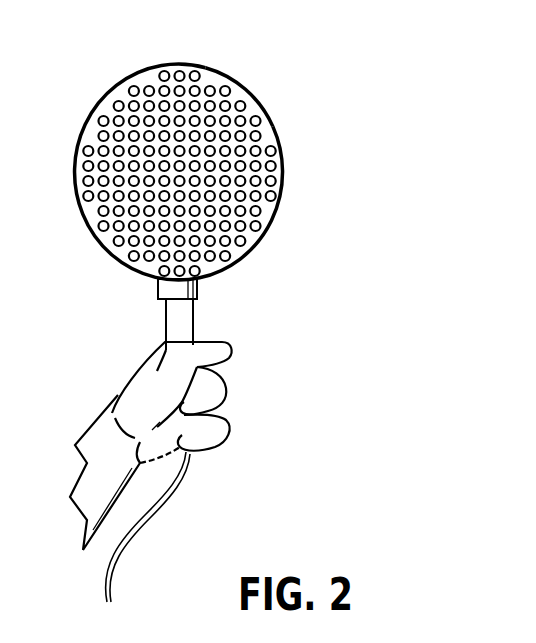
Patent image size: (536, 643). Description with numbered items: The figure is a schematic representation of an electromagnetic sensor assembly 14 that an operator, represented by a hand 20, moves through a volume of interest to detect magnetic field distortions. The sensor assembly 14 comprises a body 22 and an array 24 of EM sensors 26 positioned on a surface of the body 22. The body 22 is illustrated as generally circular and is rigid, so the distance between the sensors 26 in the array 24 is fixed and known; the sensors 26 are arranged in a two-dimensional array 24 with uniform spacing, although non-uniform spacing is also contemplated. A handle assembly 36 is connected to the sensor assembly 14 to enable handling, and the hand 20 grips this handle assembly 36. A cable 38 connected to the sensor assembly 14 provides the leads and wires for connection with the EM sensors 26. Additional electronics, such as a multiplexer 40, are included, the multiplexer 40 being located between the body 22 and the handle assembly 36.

The EM sensor assembly 14 is at (283, 248).
The hand 20 is at (90, 423).
The body 22 is at (231, 78).
The array 24 is at (257, 106).
The EM sensors 26 is at (280, 178).
The handle assembly 36 is at (195, 335).
The cable 38 is at (152, 518).
The multiplexer 40 is at (157, 293).